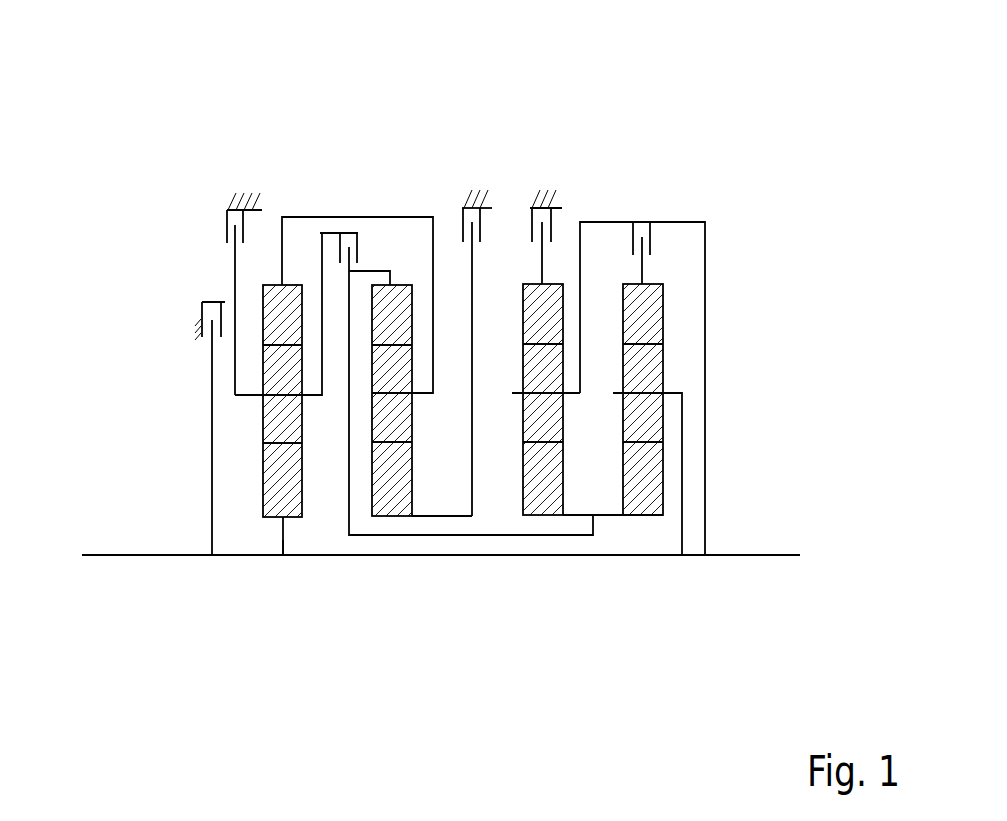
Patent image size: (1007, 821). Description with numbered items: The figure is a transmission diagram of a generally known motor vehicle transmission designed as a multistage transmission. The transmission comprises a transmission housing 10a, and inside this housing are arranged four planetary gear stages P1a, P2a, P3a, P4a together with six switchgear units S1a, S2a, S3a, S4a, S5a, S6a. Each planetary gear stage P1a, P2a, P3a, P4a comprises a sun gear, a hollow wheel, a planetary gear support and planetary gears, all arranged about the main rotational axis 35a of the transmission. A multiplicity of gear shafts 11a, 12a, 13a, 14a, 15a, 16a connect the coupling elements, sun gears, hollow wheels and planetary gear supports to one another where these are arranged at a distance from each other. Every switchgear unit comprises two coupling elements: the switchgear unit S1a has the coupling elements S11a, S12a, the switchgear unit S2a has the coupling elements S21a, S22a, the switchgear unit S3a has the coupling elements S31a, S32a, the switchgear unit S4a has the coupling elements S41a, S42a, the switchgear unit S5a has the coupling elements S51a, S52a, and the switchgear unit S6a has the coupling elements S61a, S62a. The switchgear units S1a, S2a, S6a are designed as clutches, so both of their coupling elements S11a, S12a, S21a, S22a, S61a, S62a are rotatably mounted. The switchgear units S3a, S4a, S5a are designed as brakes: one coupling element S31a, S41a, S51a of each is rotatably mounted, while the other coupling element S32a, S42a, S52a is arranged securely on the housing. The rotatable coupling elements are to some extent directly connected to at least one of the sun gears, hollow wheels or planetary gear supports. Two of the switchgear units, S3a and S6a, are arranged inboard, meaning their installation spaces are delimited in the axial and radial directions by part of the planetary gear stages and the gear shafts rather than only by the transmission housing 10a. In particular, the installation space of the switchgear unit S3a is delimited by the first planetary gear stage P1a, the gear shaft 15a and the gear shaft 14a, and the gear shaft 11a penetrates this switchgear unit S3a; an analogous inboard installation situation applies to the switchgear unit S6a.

The transmission housing 10a is at (213, 286).
The gear shaft 11a is at (227, 556).
The gear shaft 12a is at (753, 556).
The gear shaft 13a is at (232, 231).
The gear shaft 14a is at (296, 216).
The gear shaft 15a is at (433, 556).
The gear shaft 16a is at (473, 393).
The main rotational axis 35a is at (117, 556).
The first planetary gear stage P1a is at (275, 564).
The planetary gear stage P2a is at (385, 564).
The planetary gear stage P3a is at (538, 564).
The planetary gear stage P4a is at (637, 564).
The switchgear unit S1a is at (212, 280).
The coupling element S11a is at (201, 323).
The coupling element S12a is at (205, 300).
The switchgear unit S2a is at (237, 176).
The coupling element S21a is at (250, 212).
The coupling element S22a is at (227, 225).
The switchgear unit S3a is at (348, 216).
The coupling element S31a is at (318, 222).
The coupling element S32a is at (360, 245).
The switchgear unit S4a is at (481, 172).
The coupling element S41a is at (461, 240).
The coupling element S42a is at (482, 224).
The switchgear unit S5a is at (553, 176).
The coupling element S51a is at (531, 228).
The coupling element S52a is at (556, 230).
The switchgear unit S6a is at (663, 210).
The coupling element S61a is at (652, 244).
The coupling element S62a is at (652, 238).